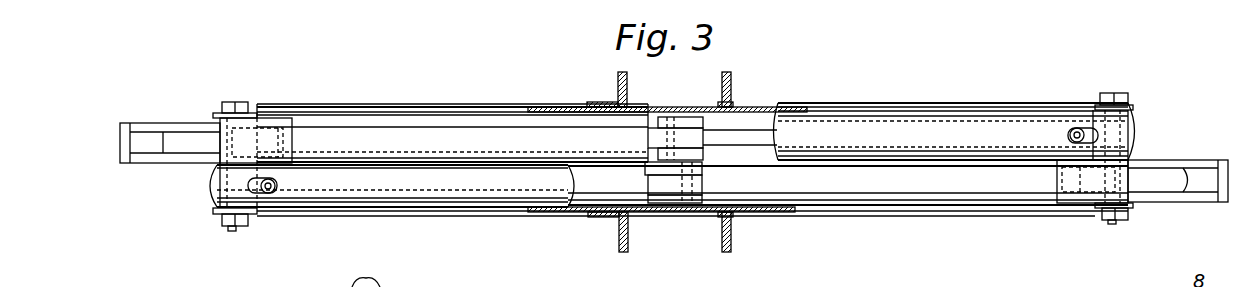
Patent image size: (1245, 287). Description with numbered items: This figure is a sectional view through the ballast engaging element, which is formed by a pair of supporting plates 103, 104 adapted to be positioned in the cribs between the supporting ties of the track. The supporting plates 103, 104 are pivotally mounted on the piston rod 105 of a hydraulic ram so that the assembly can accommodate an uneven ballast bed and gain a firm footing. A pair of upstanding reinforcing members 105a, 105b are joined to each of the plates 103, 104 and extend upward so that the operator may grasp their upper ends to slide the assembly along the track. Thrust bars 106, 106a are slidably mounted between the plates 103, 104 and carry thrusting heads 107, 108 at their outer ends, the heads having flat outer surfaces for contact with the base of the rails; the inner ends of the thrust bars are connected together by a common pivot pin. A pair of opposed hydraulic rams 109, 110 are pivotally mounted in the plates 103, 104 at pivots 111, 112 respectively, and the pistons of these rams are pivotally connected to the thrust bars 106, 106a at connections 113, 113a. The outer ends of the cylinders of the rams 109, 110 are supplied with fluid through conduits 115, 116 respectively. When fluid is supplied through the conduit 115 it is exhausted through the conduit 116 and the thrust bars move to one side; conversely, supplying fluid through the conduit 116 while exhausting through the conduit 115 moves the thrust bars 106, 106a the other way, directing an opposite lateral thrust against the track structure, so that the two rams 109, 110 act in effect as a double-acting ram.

The supporting plate 103 is at (790, 105).
The supporting plate 104 is at (780, 214).
The piston rod 105 is at (388, 286).
The upstanding reinforcing member 105a is at (618, 84).
The upstanding reinforcing member 105b is at (637, 239).
The thrust bar 106 is at (937, 168).
The thrust bar 106a is at (426, 130).
The thrusting head 107 is at (1219, 195).
The thrusting head 108 is at (118, 133).
The hydraulic ram 109 is at (892, 123).
The hydraulic ram 110 is at (502, 196).
The pivotal mounting 111 is at (1115, 225).
The pivotal mounting 112 is at (238, 231).
The pivotal connection 113 is at (667, 105).
The pivotal connection 113a is at (685, 209).
The conduit 115 is at (1070, 126).
The conduit 116 is at (273, 194).